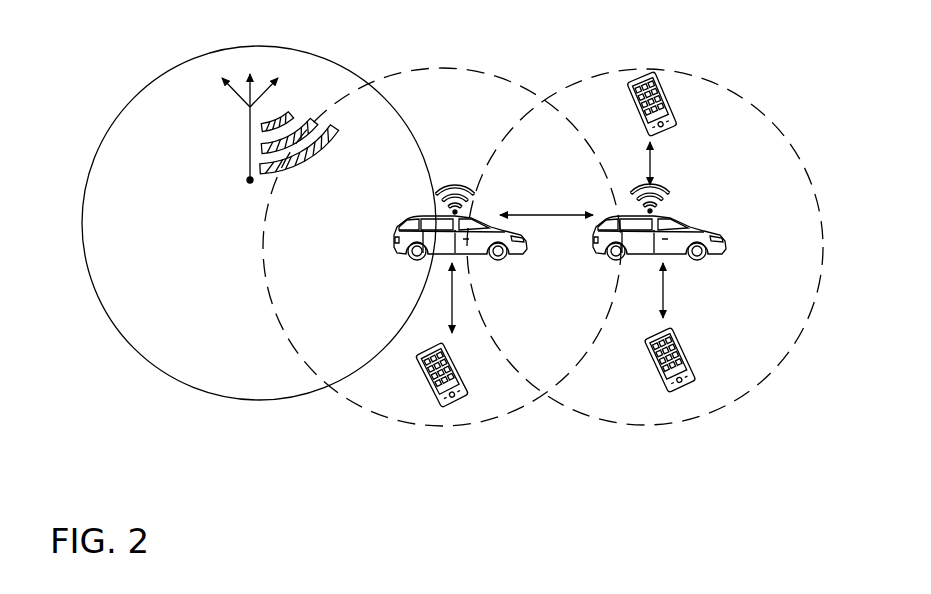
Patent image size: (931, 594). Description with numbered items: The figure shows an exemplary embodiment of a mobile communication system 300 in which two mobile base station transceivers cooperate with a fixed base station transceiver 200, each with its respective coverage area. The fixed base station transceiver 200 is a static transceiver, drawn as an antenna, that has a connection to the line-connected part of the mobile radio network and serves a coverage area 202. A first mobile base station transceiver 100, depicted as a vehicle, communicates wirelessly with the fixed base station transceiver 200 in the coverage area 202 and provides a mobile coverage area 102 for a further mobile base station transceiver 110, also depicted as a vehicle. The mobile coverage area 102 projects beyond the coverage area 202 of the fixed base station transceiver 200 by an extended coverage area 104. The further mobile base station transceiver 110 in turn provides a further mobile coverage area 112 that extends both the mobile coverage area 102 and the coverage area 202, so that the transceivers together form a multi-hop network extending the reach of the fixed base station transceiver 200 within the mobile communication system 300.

The mobile base station transceiver 100 is at (445, 242).
The mobile coverage area 102 is at (448, 69).
The extended coverage area 104 is at (512, 97).
The further mobile base station transceiver 110 is at (688, 232).
The further mobile coverage area 112 is at (688, 74).
The fixed base station transceiver 200 is at (250, 180).
The coverage area 202 is at (325, 57).
The mobile communication system 300 is at (447, 436).